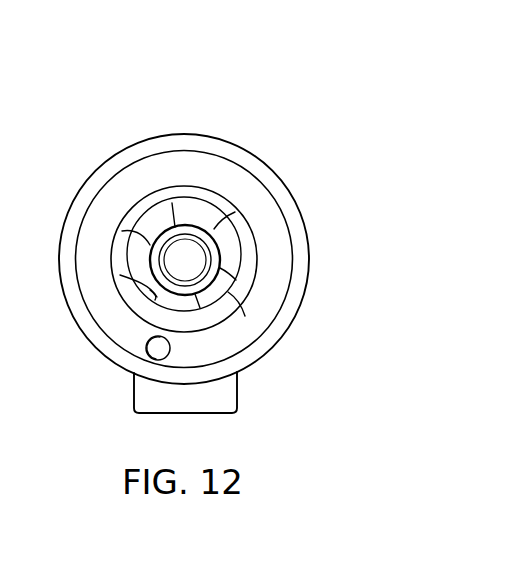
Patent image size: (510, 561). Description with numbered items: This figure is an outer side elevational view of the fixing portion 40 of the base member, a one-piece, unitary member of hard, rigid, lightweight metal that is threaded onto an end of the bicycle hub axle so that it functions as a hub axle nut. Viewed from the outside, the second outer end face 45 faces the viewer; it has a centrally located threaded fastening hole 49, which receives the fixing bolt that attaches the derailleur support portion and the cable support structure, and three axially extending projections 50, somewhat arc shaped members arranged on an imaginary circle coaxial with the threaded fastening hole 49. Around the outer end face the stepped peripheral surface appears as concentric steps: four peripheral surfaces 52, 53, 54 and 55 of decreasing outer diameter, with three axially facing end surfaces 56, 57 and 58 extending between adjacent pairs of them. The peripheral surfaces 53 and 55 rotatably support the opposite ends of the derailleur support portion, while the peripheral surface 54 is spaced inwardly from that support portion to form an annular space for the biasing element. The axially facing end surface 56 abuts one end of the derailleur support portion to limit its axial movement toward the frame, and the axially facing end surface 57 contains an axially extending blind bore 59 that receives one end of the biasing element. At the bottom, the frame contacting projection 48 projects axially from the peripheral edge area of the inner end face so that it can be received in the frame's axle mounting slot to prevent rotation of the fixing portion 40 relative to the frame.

The fixing portion 40 is at (212, 93).
The second outer end face 45 is at (202, 213).
The frame contacting projection 48 is at (237, 389).
The threaded fastening hole 49 is at (176, 243).
The axially extending projections 50 is at (155, 295).
The peripheral surface 52 is at (227, 142).
The peripheral surface 53 is at (268, 188).
The peripheral surface 54 is at (261, 254).
The peripheral surface 55 is at (232, 297).
The axially facing end surface 56 is at (252, 166).
The axially facing end surface 57 is at (267, 225).
The axially facing end surface 58 is at (243, 283).
The axially extending blind bore 59 is at (150, 352).